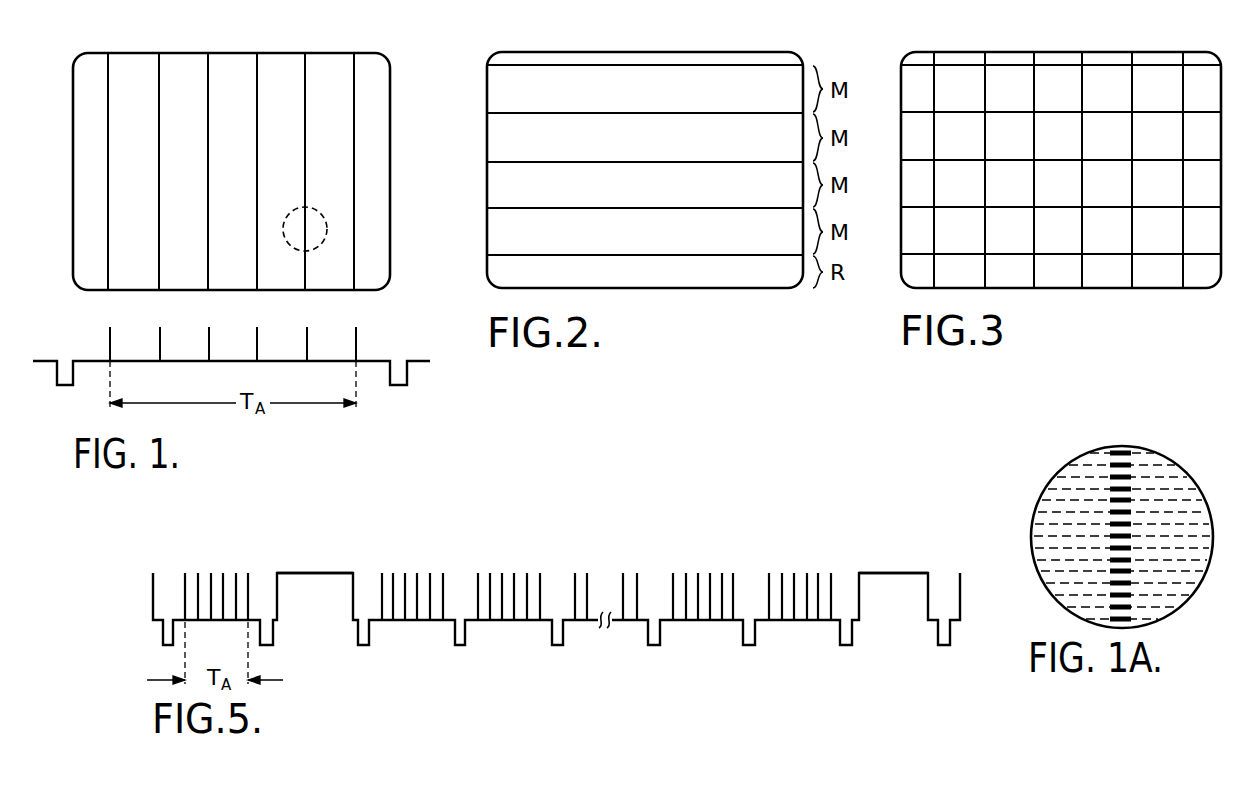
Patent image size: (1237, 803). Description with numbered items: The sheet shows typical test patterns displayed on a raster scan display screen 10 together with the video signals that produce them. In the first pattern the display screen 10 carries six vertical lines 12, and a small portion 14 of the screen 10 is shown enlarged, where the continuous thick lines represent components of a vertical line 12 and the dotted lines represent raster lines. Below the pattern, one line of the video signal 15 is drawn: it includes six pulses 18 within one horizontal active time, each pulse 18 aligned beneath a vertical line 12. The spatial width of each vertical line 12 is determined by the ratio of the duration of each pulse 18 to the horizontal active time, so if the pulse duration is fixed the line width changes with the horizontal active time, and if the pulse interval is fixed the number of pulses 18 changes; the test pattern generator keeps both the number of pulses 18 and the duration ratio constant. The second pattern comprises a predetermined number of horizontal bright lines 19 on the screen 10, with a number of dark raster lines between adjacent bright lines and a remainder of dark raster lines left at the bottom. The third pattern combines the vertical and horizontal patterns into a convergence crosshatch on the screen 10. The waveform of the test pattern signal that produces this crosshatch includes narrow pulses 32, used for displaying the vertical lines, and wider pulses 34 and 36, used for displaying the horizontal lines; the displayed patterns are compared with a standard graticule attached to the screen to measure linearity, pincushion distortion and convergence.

In FIG. 1, the display screen 10 is at (262, 49).
In FIG. 2, the display screen 10 is at (672, 48).
In FIG. 3, the display screen 10 is at (1093, 46).
In FIG. 1, the vertical lines 12 is at (159, 106).
In FIG. 1, the portion of screen 14 is at (283, 230).
In FIG. 1A, the portion of screen 14 is at (1036, 509).
In FIG. 1, the video signal 15 is at (391, 359).
In FIG. 1, the pulses 18 is at (160, 343).
In FIG. 2, the horizontal lines 19 is at (637, 67).
In FIG. 5, the pulses 32 is at (232, 572).
In FIG. 5, the pulse 34 is at (332, 572).
In FIG. 5, the pulse 36 is at (890, 565).